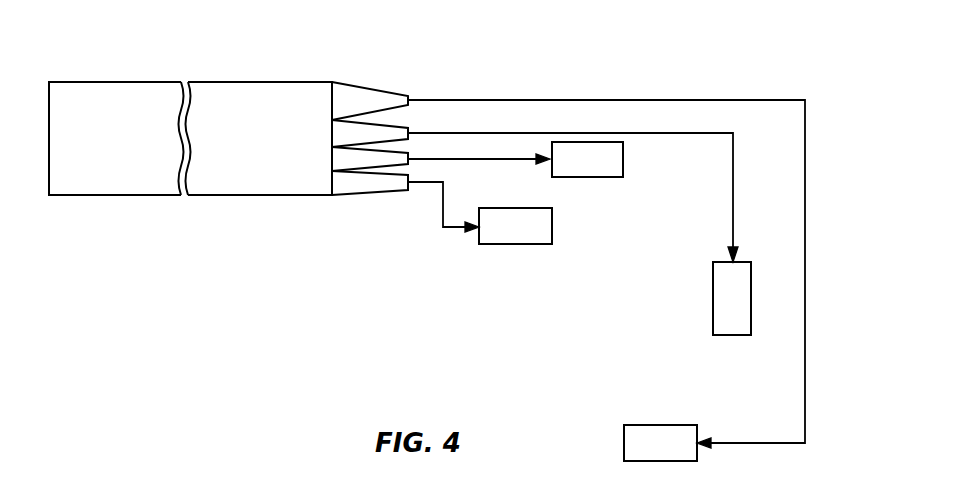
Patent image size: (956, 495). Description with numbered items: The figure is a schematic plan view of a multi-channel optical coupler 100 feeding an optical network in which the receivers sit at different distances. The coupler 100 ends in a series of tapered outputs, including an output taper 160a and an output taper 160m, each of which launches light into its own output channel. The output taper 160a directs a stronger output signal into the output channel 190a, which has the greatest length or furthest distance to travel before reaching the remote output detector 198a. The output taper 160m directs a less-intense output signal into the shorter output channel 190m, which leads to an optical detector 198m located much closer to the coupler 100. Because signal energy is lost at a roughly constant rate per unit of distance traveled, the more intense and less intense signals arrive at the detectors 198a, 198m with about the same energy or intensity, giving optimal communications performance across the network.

The optical coupler 100 is at (227, 222).
The output taper 160a is at (365, 88).
The output taper 160m is at (358, 193).
The output channel 190a is at (673, 99).
The output channel 190m is at (443, 210).
The output detector 198a is at (660, 443).
The optical detector 198m is at (515, 226).